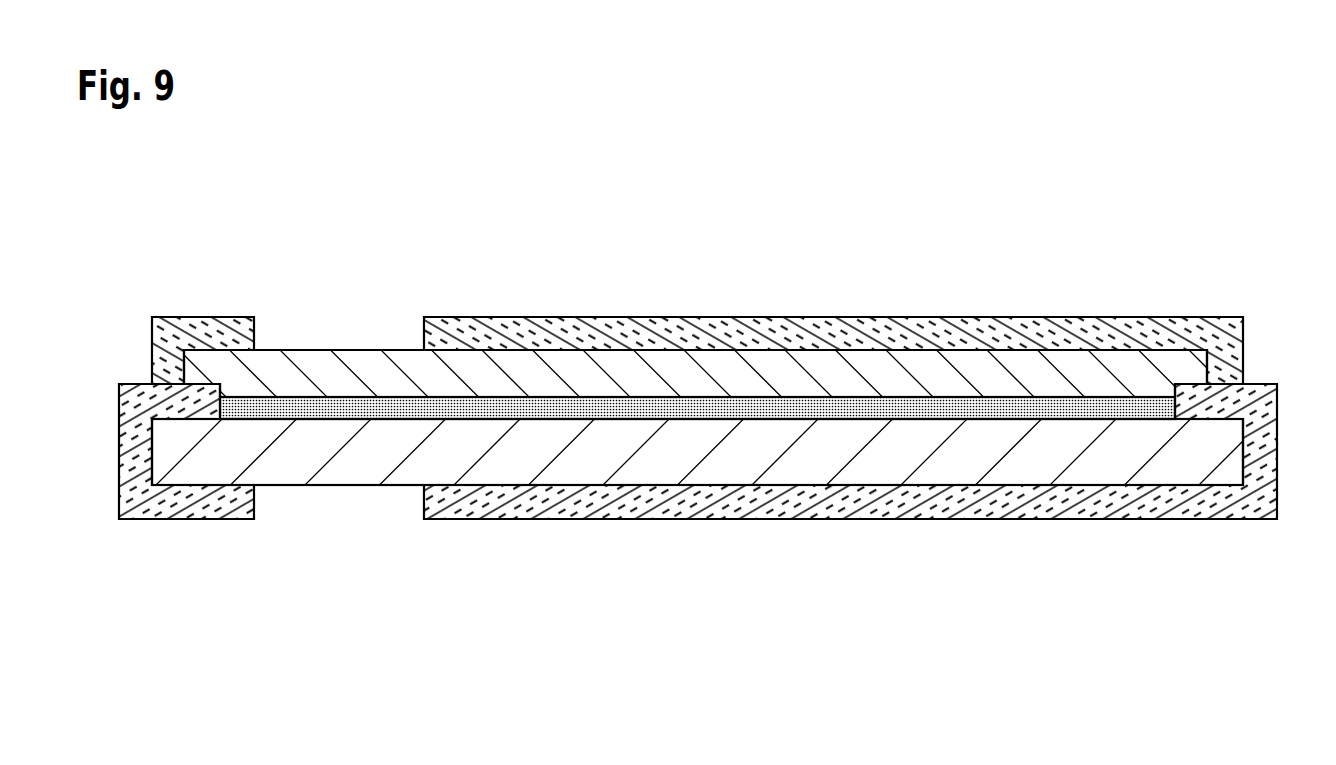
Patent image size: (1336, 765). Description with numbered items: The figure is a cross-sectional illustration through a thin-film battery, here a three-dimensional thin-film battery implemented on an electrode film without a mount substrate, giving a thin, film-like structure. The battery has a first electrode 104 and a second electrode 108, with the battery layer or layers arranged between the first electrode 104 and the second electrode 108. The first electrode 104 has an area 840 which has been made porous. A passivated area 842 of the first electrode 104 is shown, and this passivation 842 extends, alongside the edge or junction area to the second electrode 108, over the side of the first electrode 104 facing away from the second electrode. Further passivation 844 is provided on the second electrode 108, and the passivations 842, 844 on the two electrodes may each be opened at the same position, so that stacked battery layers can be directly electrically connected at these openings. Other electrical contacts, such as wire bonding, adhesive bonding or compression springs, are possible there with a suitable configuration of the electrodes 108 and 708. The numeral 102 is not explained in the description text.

The lower cover layer 102 is at (590, 510).
The first electrode 104 is at (995, 462).
The second electrode 108 is at (385, 365).
The electrode 708 is at (328, 505).
The porous area 840 is at (818, 395).
The passivated area 842 is at (1263, 393).
The further passivation 844 is at (700, 332).